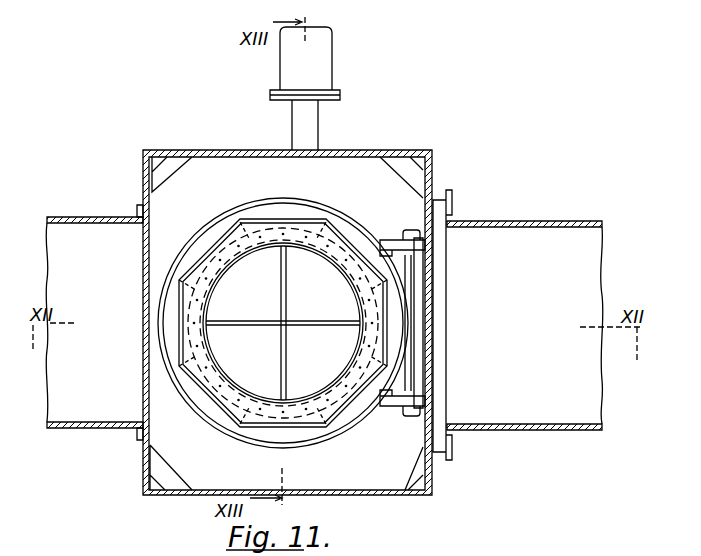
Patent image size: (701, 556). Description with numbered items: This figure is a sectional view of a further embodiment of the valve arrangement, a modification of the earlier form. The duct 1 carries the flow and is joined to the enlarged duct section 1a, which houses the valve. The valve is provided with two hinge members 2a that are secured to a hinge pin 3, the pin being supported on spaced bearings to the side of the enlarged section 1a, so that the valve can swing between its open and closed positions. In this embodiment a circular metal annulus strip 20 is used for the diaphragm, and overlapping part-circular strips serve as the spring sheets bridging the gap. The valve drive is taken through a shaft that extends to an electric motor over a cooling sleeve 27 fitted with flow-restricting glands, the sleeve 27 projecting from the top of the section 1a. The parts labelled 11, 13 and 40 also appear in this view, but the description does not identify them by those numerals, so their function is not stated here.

The duct 1 is at (108, 428).
The duct section 1a is at (200, 493).
The cooling sleeve 27 is at (308, 135).
The valve disc 11 is at (297, 437).
The sealing ring 13 is at (268, 428).
The circular metal annulus strip 20 is at (327, 427).
The hinge pin 3 is at (424, 374).
The hinge members 2a is at (421, 243).
The bolt 40 is at (406, 232).